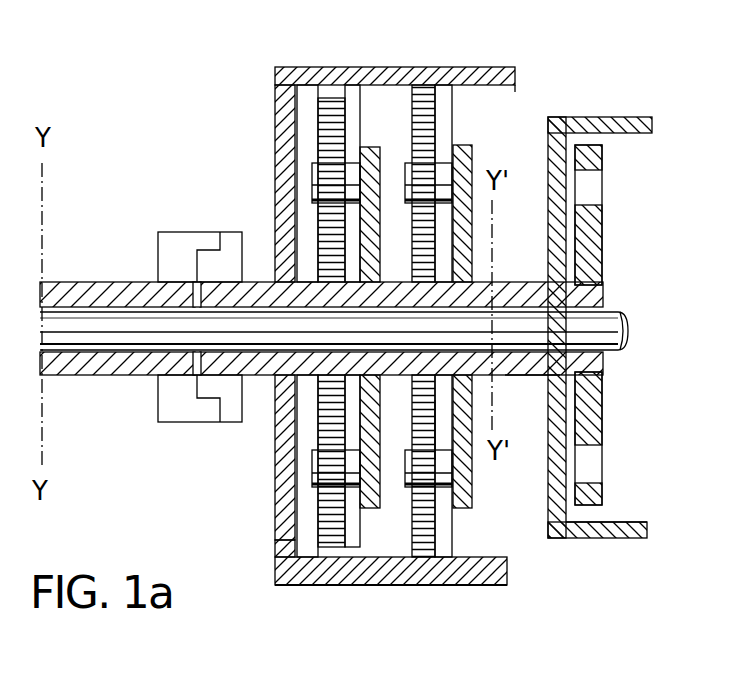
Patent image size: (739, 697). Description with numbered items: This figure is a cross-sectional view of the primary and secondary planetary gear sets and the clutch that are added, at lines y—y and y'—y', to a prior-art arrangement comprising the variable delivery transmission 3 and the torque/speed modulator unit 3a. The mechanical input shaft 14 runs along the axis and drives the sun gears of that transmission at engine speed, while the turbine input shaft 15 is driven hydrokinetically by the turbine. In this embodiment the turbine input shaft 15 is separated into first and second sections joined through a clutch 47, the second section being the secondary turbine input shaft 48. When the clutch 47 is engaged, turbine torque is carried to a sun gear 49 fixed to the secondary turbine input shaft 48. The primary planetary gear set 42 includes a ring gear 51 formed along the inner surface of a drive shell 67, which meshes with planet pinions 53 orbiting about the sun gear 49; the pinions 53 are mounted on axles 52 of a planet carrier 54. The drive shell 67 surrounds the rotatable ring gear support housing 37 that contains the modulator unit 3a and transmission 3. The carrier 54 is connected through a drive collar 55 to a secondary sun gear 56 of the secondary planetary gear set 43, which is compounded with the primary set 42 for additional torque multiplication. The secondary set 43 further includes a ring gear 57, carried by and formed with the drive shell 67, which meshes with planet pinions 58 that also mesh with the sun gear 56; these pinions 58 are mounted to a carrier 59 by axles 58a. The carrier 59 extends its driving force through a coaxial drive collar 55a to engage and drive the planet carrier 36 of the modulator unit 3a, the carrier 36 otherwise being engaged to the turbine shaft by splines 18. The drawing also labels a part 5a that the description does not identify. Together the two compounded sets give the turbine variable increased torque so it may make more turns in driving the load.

The variable delivery transmission 3 is at (640, 544).
The torque/speed modulator unit 3a is at (592, 544).
The housing side wall 5a is at (277, 462).
The mechanical input shaft 14 is at (110, 282).
The turbine input drive shaft 15 is at (120, 375).
The splines 18 is at (603, 285).
The planet carrier 36 is at (603, 492).
The rotatable ring gear support housing 37 is at (598, 117).
The primary planetary gear set 42 is at (322, 592).
The secondary planetary gear set 43 is at (425, 592).
The clutch 47 is at (180, 226).
The secondary turbine input shaft 48 is at (266, 282).
The sun gear 49 is at (278, 400).
The ring gear 51 is at (282, 562).
The axles 52 is at (312, 470).
The planet pinions 53 is at (318, 135).
The planet carrier 54 is at (362, 147).
The drive collar 55 is at (334, 331).
The coaxial drive collar 55a is at (527, 378).
The secondary sun gear 56 is at (437, 400).
The ring gear 57 is at (402, 553).
The planet pinions 58 is at (440, 113).
The axles 58a is at (408, 165).
The carrier 59 is at (462, 145).
The drive shell 67 is at (402, 67).